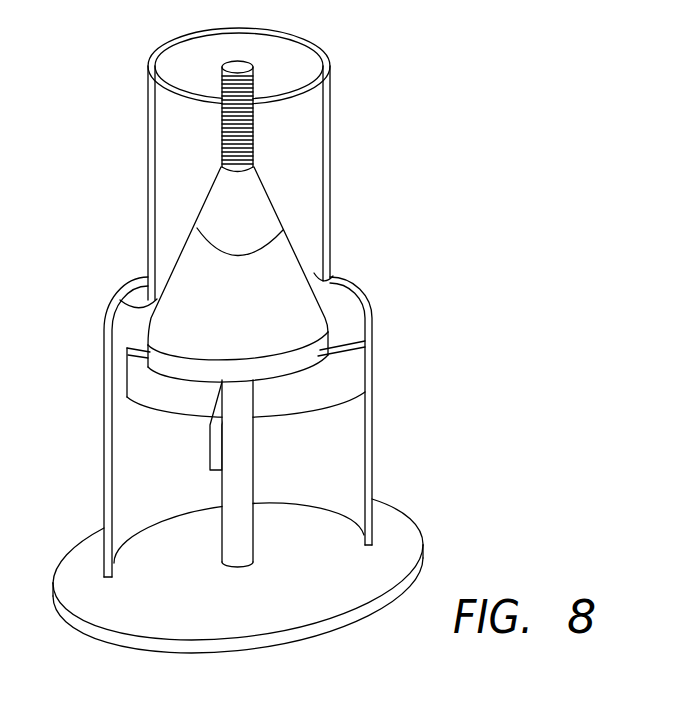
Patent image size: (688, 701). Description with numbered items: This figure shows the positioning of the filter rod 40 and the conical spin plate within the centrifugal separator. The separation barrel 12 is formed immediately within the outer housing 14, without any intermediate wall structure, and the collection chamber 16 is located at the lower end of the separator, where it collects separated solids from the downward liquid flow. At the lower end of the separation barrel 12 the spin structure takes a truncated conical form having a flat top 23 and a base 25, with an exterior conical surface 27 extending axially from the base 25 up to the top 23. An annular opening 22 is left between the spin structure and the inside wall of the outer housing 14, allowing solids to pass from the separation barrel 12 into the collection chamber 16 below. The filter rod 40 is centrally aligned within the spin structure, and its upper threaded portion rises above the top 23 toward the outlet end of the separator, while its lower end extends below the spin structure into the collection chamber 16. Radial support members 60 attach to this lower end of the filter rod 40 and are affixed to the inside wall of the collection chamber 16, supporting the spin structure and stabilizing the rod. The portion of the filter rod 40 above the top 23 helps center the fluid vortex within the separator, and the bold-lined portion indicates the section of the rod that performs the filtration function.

The separation barrel 12 is at (183, 160).
The outer housing 14 is at (373, 421).
The collection chamber 16 is at (325, 467).
The annular opening 22 is at (132, 300).
The top 23 is at (246, 160).
The base 25 is at (327, 333).
The exterior conical surface 27 is at (238, 334).
The filter rod 40 is at (222, 122).
The radial support members 60 is at (130, 374).